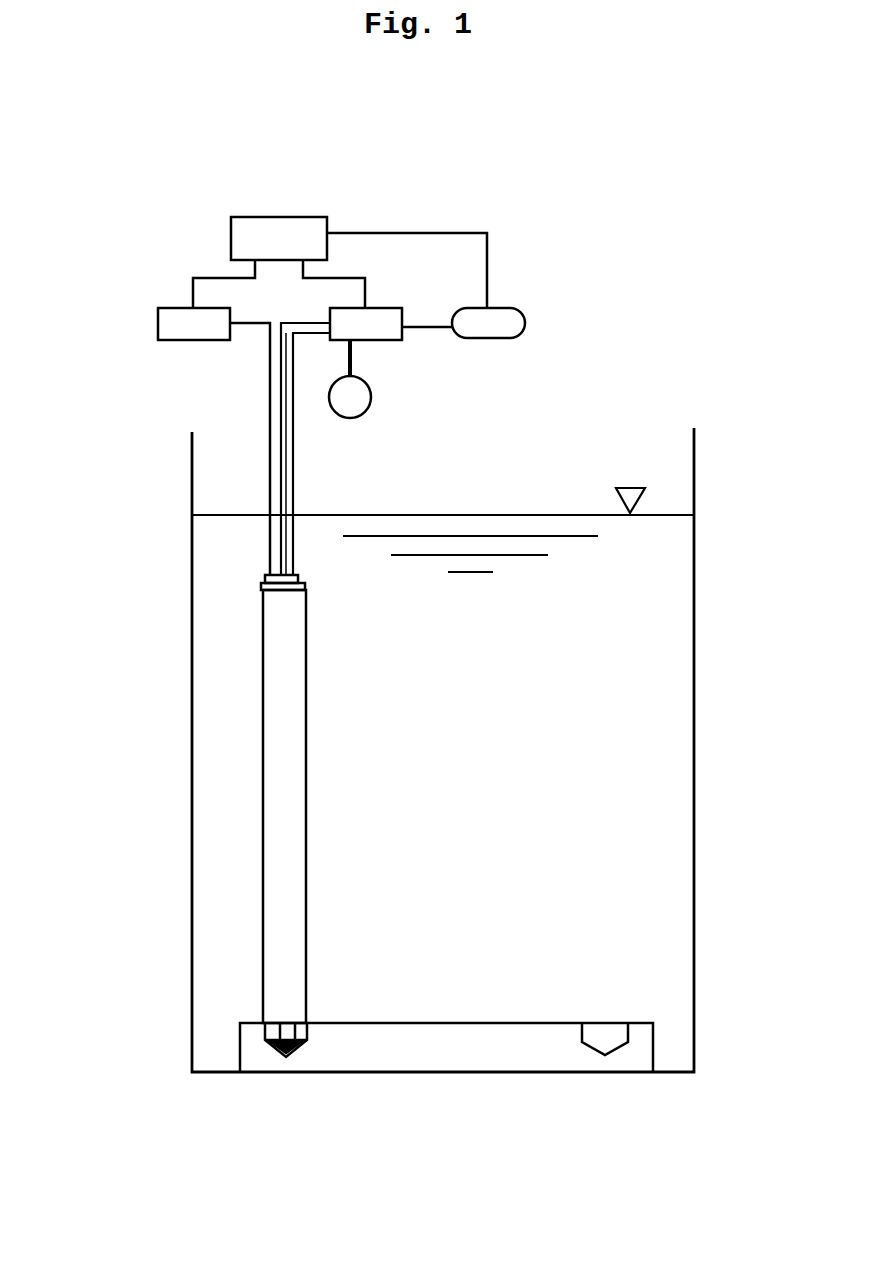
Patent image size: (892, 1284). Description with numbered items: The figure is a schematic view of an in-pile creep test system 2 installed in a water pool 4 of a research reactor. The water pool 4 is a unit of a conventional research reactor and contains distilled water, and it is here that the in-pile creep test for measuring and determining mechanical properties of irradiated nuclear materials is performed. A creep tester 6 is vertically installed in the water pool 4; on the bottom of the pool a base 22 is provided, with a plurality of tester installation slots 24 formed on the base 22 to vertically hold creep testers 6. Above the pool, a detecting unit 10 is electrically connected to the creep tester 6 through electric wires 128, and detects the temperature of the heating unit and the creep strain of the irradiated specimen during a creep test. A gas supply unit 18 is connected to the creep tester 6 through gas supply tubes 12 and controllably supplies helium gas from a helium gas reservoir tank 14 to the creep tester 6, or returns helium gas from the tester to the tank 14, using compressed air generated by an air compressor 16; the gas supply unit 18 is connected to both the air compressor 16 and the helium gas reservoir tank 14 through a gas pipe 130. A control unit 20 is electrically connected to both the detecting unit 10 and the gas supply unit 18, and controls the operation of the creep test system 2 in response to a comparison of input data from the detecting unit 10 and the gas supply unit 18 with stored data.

The in-pile creep test system 2 is at (118, 262).
The water pool 4 is at (695, 712).
The creep tester 6 is at (254, 817).
The detecting unit 10 is at (158, 330).
The gas supply tubes 12 is at (293, 452).
The helium gas reservoir tank 14 is at (365, 408).
The air compressor 16 is at (487, 338).
The gas supply unit 18 is at (365, 308).
The control unit 20 is at (300, 217).
The base 22 is at (628, 1060).
The tester installation slots 24 is at (590, 1042).
The electric wires 128 is at (270, 430).
The gas pipe 130 is at (422, 327).